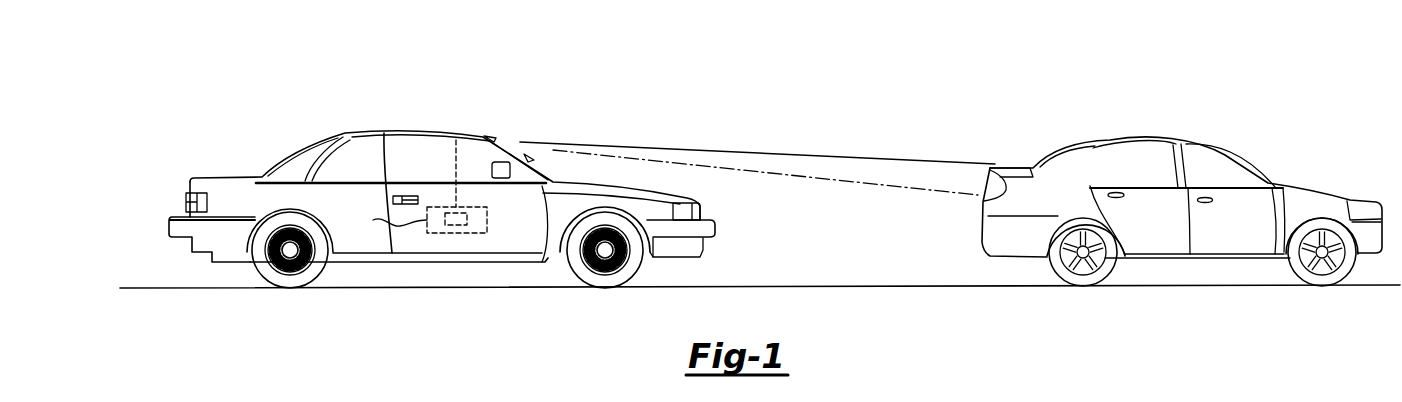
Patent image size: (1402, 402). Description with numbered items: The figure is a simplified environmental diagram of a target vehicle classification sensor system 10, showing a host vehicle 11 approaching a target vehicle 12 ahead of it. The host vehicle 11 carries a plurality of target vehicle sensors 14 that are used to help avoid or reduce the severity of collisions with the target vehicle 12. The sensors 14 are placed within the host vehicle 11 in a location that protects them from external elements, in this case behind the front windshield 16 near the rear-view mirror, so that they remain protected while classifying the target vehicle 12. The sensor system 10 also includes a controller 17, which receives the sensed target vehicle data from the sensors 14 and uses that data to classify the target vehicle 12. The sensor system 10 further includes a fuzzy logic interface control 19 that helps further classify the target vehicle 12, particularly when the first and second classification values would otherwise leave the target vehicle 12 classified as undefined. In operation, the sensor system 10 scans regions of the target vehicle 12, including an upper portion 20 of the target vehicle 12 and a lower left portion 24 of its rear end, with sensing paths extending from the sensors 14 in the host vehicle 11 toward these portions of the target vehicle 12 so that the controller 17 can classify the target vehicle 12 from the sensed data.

The target vehicle classification sensor system 10 is at (1229, 62).
The host vehicle 11 is at (384, 131).
The target vehicle 12 is at (1158, 138).
The target vehicle sensors 14 is at (490, 137).
The front windshield 16 is at (531, 156).
The controller 17 is at (388, 221).
The fuzzy logic interface control 19 is at (487, 220).
The upper portion 20 is at (870, 157).
The lower left portion 24 is at (785, 170).